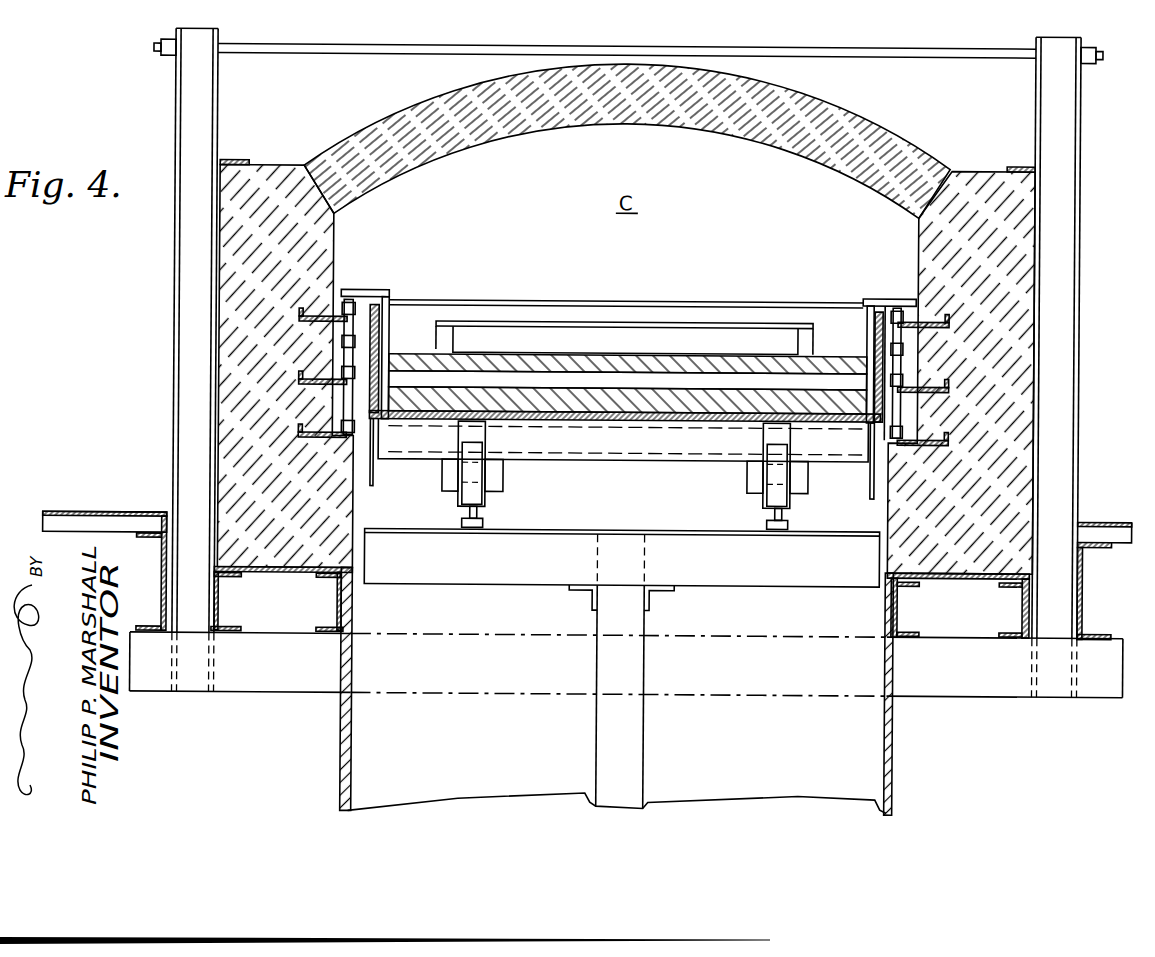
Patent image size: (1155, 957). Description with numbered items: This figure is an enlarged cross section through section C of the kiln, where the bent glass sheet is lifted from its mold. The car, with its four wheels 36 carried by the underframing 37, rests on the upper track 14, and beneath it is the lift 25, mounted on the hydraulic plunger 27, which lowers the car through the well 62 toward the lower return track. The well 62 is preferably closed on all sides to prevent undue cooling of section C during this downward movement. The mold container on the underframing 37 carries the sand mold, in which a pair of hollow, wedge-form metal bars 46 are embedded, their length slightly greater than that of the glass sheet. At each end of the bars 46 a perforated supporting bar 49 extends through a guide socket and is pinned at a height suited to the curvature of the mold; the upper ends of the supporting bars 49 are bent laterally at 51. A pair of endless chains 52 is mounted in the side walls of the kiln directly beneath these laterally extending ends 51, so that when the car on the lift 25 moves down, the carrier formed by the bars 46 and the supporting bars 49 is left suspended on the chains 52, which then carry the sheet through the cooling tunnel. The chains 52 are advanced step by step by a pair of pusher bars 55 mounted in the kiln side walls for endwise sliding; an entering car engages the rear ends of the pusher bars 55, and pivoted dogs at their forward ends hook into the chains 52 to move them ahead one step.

The track 14 is at (482, 524).
The lift 25 is at (655, 540).
The hydraulic plunger 27 is at (633, 738).
The wheels 36 is at (460, 501).
The underframing 37 is at (562, 447).
The metal bars 46 is at (628, 383).
The supporting bar 49 is at (377, 334).
The laterally bent ends 51 is at (353, 298).
The endless chains 52 is at (300, 334).
The pusher bars 55 is at (336, 358).
The well 62 is at (828, 760).